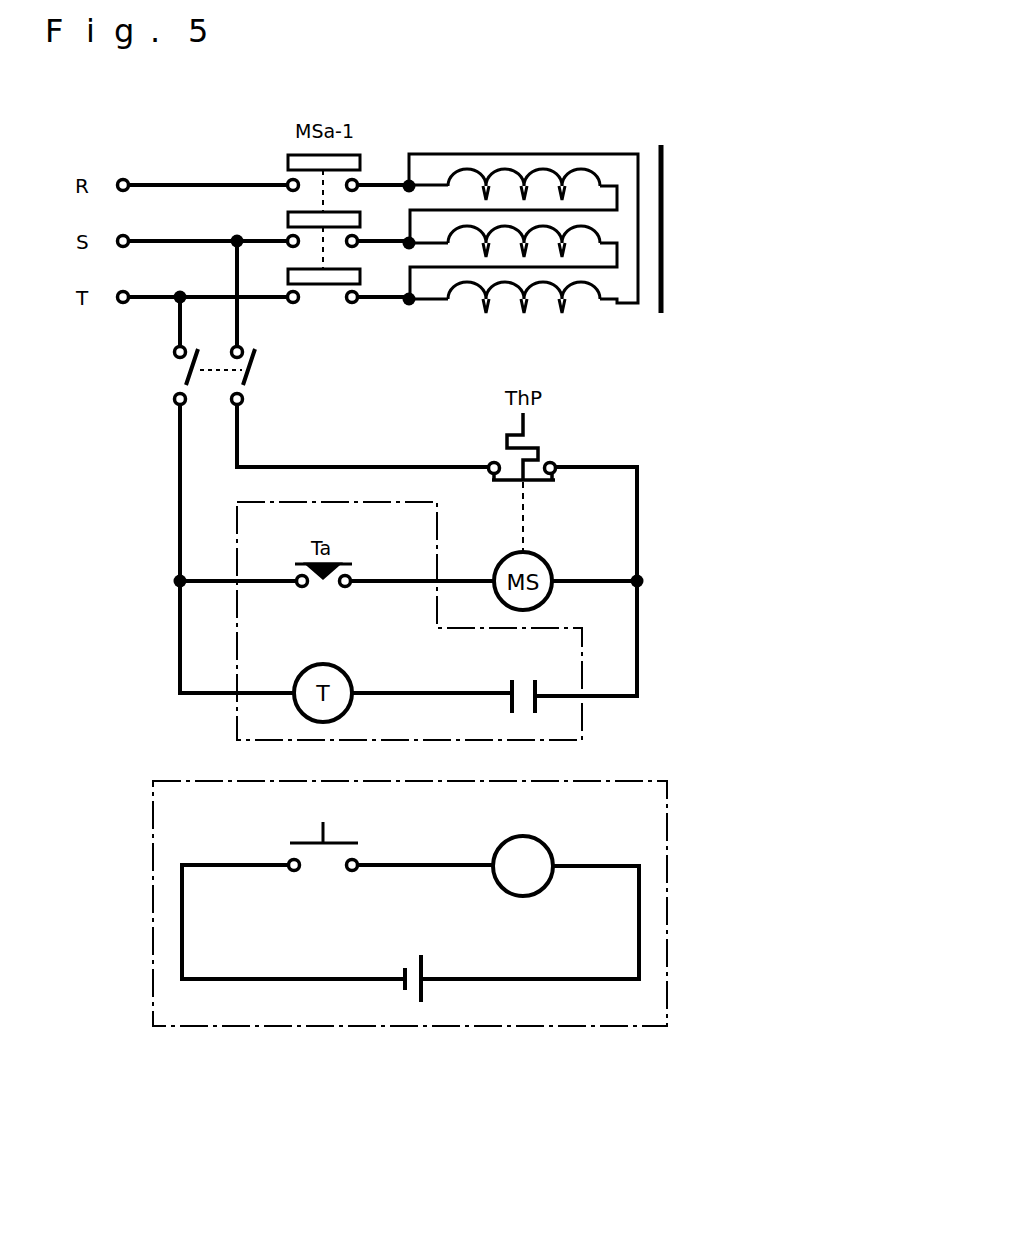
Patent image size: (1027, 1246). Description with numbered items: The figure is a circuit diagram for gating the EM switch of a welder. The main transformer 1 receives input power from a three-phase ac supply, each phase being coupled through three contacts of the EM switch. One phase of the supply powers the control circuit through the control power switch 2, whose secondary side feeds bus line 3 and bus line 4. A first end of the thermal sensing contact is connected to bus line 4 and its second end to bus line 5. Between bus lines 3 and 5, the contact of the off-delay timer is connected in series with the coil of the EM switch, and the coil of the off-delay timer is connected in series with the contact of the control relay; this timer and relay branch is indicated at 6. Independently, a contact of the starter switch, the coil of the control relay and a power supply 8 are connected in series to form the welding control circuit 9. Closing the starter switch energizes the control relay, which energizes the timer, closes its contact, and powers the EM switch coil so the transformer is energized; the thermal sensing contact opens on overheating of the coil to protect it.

The main transformer 1 is at (665, 223).
The control power switch 2 is at (187, 381).
The bus line 3 is at (180, 550).
The bus line 4 is at (365, 465).
The bus line 5 is at (642, 570).
The timer relay contact circuit 6 is at (582, 678).
The power supply 8 is at (432, 1003).
The welding control circuit 9 is at (442, 939).